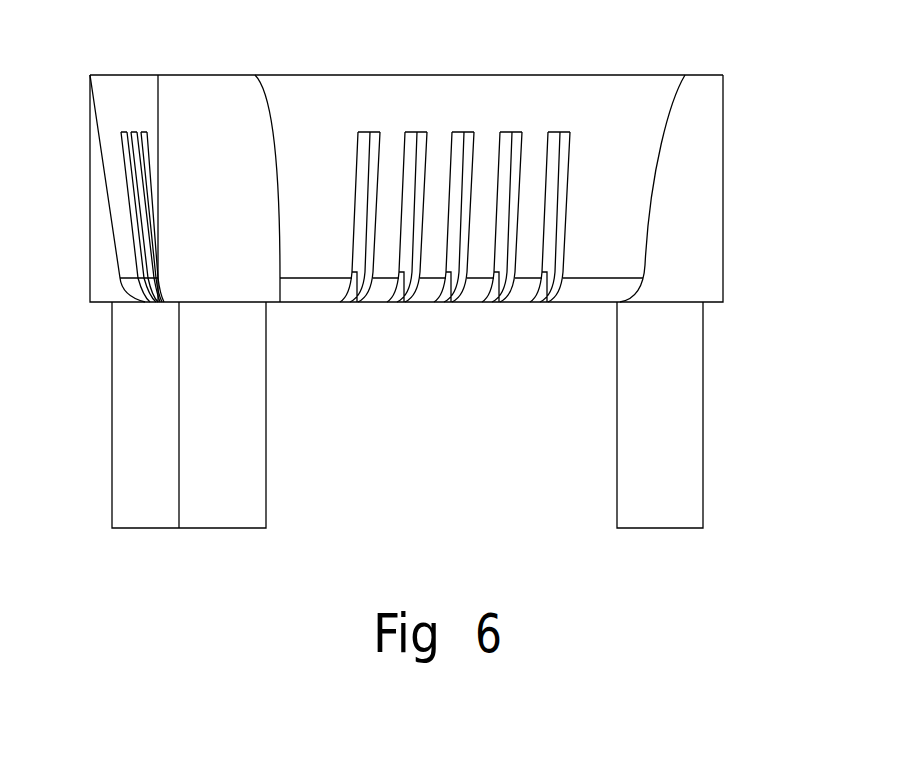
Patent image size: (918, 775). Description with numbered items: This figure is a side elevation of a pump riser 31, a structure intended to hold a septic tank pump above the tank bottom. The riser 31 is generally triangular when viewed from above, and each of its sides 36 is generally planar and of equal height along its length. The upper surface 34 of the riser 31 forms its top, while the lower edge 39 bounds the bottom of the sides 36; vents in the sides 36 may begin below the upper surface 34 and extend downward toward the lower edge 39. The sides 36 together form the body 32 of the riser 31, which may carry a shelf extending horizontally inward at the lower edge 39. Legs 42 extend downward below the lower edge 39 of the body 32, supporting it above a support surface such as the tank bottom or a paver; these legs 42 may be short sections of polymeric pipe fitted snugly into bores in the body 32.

The pump riser 31 is at (723, 180).
The body 32 is at (708, 98).
The upper surface 34 is at (578, 75).
The side 36 is at (302, 92).
The lower edge 39 is at (313, 302).
The leg 42 is at (127, 353).